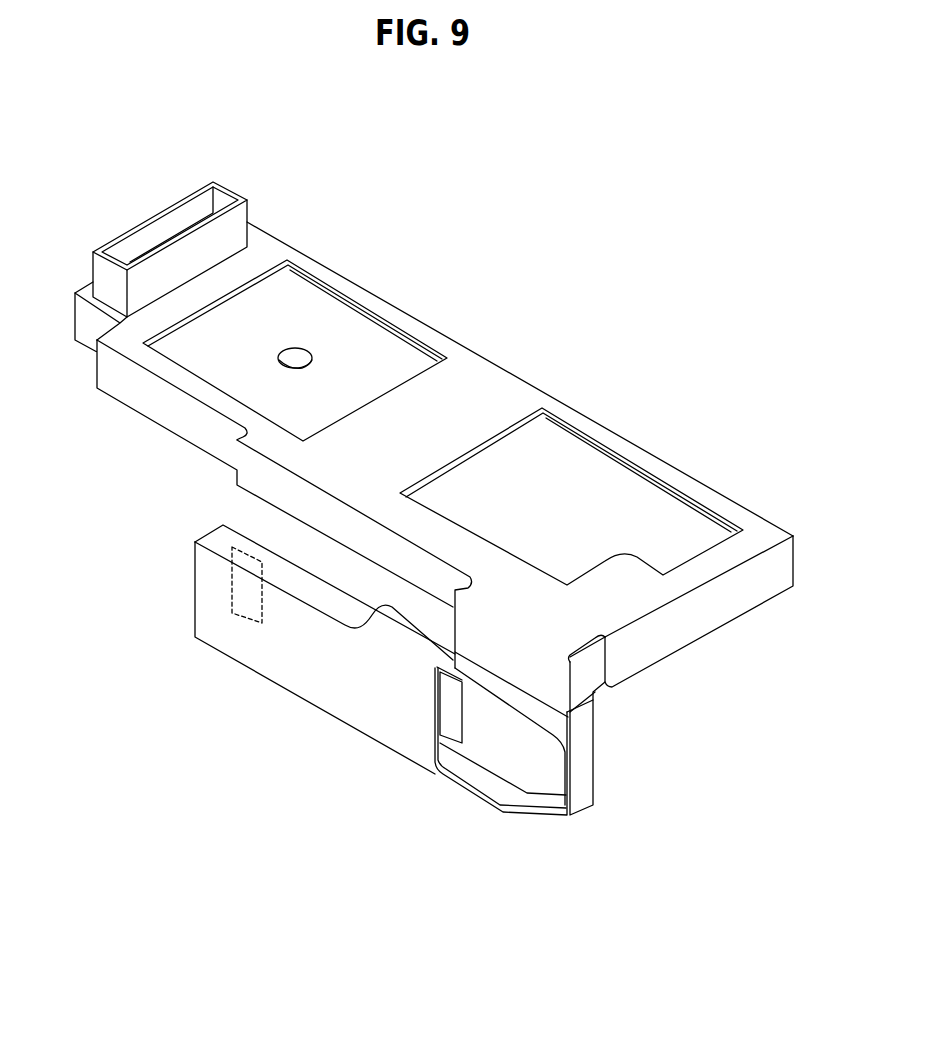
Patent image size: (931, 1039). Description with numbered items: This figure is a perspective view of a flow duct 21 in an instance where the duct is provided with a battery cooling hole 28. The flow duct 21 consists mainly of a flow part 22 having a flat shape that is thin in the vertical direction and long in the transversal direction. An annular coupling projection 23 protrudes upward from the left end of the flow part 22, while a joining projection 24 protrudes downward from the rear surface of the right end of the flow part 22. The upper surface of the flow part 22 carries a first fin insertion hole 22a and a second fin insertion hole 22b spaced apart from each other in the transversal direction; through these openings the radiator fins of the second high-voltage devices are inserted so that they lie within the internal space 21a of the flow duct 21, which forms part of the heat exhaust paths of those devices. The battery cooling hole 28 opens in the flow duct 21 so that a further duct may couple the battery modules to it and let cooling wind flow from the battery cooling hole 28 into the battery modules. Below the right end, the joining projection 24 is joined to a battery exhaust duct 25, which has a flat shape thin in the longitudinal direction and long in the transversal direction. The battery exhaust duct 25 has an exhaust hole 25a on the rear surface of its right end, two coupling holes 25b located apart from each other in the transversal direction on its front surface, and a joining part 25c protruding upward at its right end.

The flow duct 21 is at (483, 410).
The internal space 21a is at (632, 505).
The flow part 22 is at (470, 390).
The first fin insertion hole 22a is at (305, 279).
The second fin insertion hole 22b is at (632, 458).
The coupling projection 23 is at (237, 223).
The joining projection 24 is at (587, 692).
The battery exhaust duct 25 is at (312, 687).
The exhaust hole 25a is at (565, 752).
The coupling holes 25b is at (252, 605).
The joining part 25c is at (580, 720).
The battery cooling hole 28 is at (297, 364).